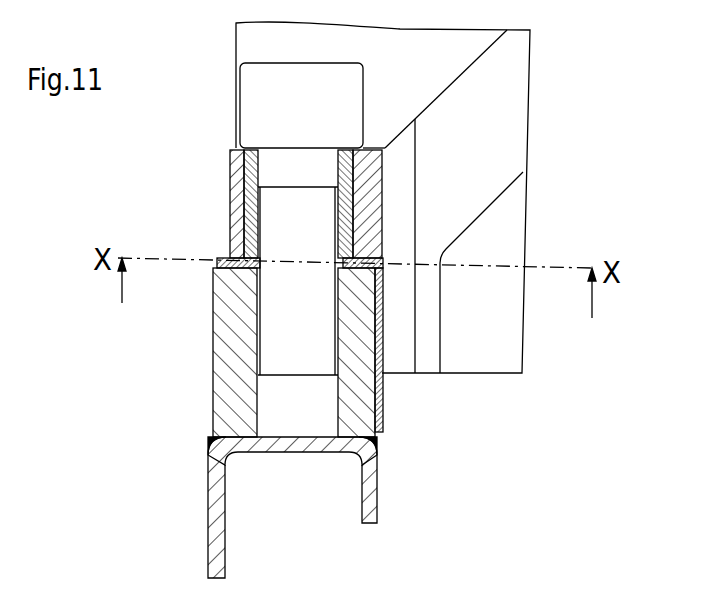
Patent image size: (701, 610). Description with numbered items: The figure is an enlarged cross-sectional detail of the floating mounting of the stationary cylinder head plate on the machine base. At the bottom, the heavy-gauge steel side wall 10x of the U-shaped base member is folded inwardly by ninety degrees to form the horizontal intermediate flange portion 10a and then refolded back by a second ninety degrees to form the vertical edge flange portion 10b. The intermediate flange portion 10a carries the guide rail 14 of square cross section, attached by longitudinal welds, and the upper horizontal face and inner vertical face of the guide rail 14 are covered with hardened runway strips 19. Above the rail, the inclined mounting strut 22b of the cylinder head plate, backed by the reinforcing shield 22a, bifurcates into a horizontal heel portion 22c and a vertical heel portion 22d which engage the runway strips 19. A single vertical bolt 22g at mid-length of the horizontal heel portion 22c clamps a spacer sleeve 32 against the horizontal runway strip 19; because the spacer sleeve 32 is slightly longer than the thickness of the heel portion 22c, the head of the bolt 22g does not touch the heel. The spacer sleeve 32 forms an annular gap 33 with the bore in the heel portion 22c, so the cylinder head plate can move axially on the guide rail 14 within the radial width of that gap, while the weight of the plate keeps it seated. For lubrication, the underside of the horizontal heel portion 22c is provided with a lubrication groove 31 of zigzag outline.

The inclined mounting strut 22b is at (500, 110).
The reinforcing shield 22a is at (507, 213).
The vertical heel portion 22d is at (403, 325).
The vertical bolt 22g is at (343, 85).
The horizontal heel portion 22c is at (233, 202).
The spacer sleeve 32 is at (240, 163).
The lubrication groove 31 is at (362, 222).
The annular gap 33 is at (368, 184).
The runway strip 19 is at (222, 258).
The guide rail 14 is at (227, 378).
The intermediate flange portion 10a is at (308, 448).
The side wall 10x is at (217, 545).
The edge flange portion 10b is at (372, 485).